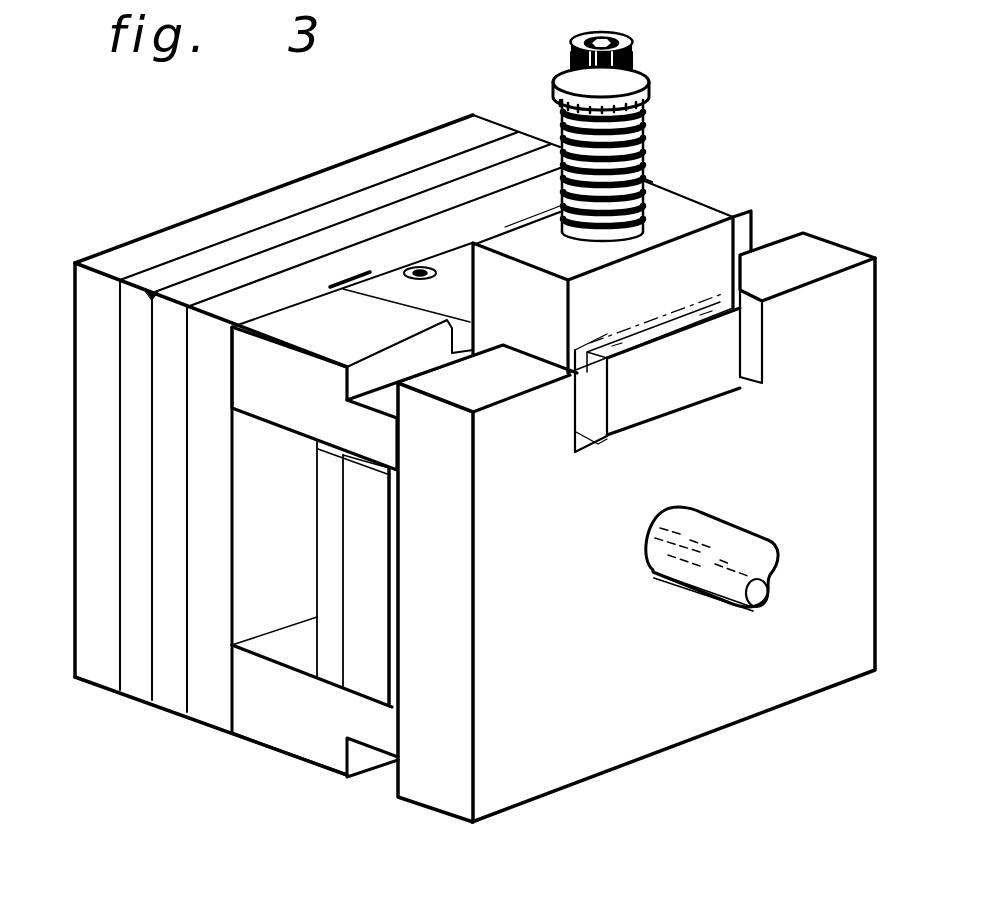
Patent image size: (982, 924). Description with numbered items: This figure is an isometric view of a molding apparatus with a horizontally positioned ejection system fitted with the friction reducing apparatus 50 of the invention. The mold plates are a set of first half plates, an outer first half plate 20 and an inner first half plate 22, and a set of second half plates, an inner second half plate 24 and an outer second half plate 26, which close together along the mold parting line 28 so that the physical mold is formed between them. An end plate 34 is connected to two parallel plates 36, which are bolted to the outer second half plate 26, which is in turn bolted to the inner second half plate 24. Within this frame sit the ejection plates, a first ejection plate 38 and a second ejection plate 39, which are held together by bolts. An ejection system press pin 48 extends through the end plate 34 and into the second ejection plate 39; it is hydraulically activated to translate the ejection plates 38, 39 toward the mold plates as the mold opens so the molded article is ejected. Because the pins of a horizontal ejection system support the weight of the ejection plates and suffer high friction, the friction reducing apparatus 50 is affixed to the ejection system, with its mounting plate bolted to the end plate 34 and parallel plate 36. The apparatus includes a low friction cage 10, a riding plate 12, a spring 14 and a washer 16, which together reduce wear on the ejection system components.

The low friction cage 10 is at (717, 287).
The riding plate 12 is at (690, 205).
The spring 14 is at (650, 118).
The washer 16 is at (655, 94).
The outer first half plate 20 is at (150, 253).
The inner first half plate 22 is at (307, 218).
The inner second half plate 24 is at (167, 678).
The outer second half plate 26 is at (213, 703).
The mold parting line 28 is at (126, 297).
The end plate 34 is at (586, 553).
The parallel plates 36 is at (296, 395).
The first ejection plate 38 is at (322, 600).
The second ejection plate 39 is at (375, 552).
The ejection system press pin 48 is at (722, 535).
The friction reducing apparatus 50 is at (537, 80).